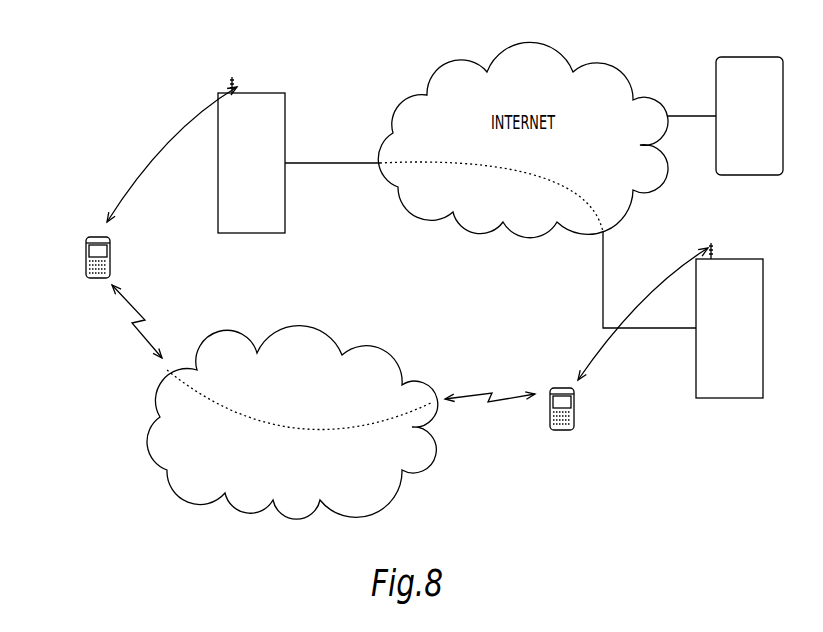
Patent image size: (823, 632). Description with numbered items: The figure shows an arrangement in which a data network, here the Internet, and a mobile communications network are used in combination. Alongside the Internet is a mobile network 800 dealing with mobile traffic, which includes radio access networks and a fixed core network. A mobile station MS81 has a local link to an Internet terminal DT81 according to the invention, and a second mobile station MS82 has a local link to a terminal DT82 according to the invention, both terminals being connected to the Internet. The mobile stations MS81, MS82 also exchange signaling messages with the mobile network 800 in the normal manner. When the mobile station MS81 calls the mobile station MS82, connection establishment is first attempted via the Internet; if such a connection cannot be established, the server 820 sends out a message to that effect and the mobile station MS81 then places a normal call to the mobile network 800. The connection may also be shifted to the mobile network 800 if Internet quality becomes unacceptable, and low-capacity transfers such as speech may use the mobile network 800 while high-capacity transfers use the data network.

The Internet terminal DT81 is at (250, 233).
The terminal DT82 is at (730, 398).
The server 820 is at (751, 56).
The mobile station MS81 is at (89, 278).
The second mobile station MS82 is at (572, 430).
The mobile network 800 is at (383, 358).